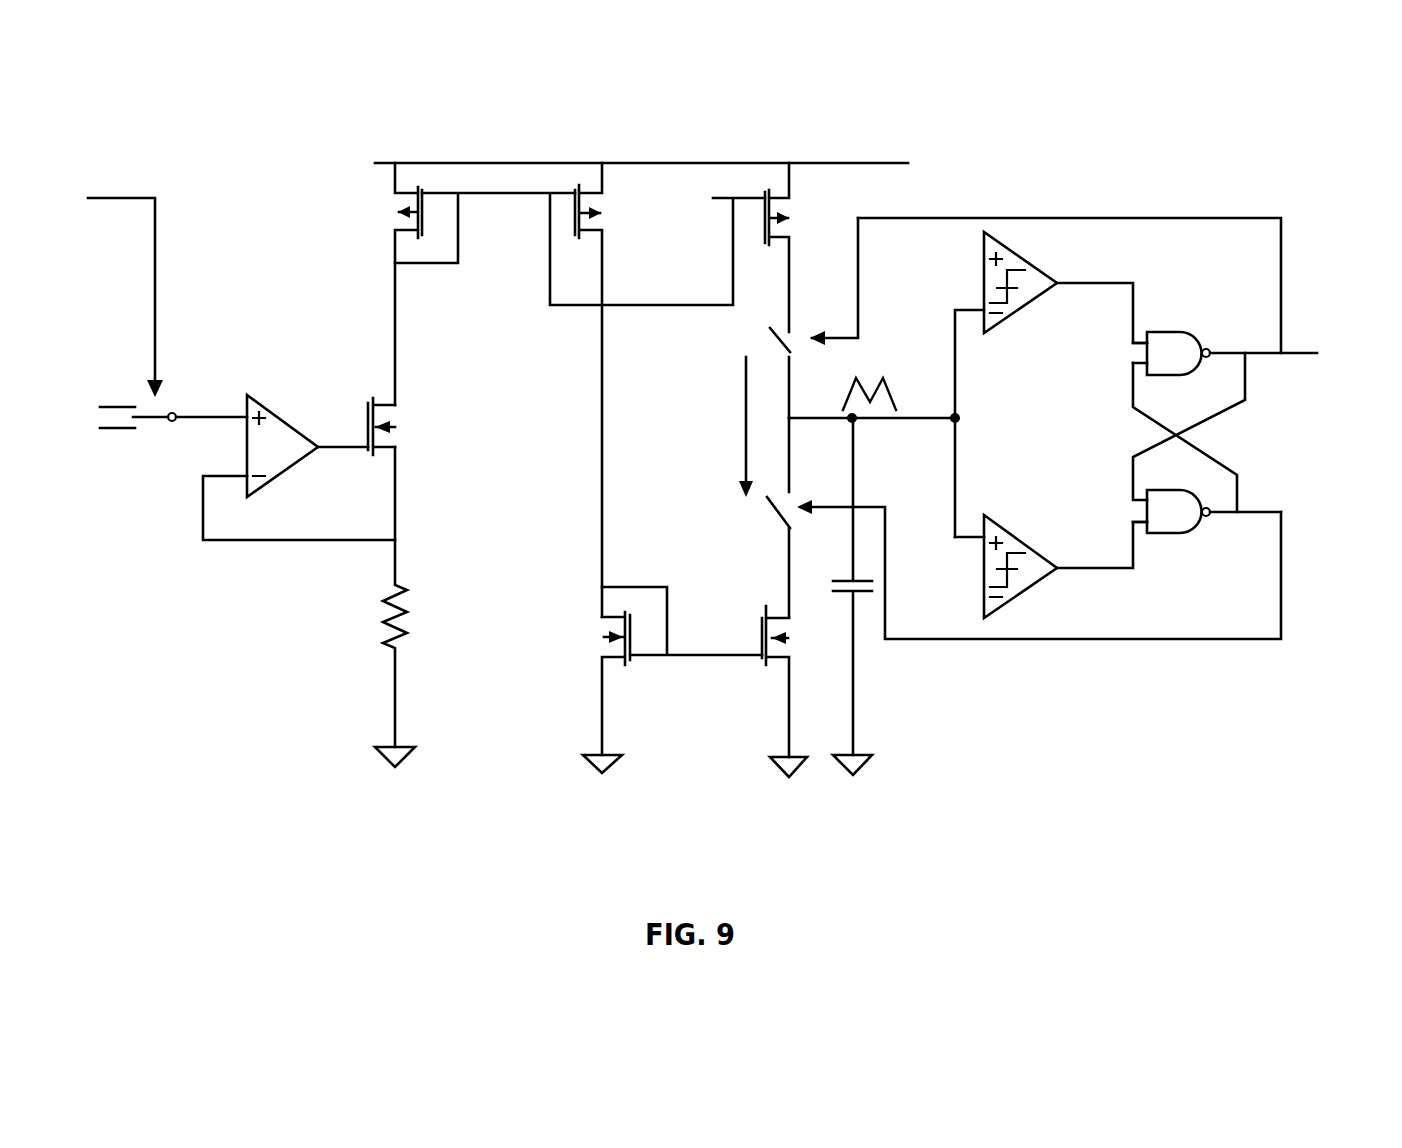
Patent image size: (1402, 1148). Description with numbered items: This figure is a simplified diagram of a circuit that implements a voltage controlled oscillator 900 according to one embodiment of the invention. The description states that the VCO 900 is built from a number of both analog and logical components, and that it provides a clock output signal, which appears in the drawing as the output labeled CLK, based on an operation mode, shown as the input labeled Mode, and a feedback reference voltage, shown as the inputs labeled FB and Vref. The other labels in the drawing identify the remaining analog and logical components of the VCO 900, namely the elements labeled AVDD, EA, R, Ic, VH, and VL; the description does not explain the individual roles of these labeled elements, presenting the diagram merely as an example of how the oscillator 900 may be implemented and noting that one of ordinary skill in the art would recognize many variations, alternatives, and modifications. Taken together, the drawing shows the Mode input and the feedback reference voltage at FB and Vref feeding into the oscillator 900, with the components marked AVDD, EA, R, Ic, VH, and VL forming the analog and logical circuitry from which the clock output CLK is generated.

The voltage controlled oscillator 900 is at (1060, 89).
The supply voltage rail AVDD is at (641, 146).
The error amplifier EA is at (282, 446).
The resistor R is at (410, 597).
The capacitor charging current Ic is at (736, 427).
The mode select input Mode is at (90, 292).
The feedback input FB is at (92, 402).
The reference voltage input Vref is at (109, 428).
The high threshold comparator VH is at (984, 261).
The low threshold comparator VL is at (984, 597).
The clock output CLK is at (1295, 357).